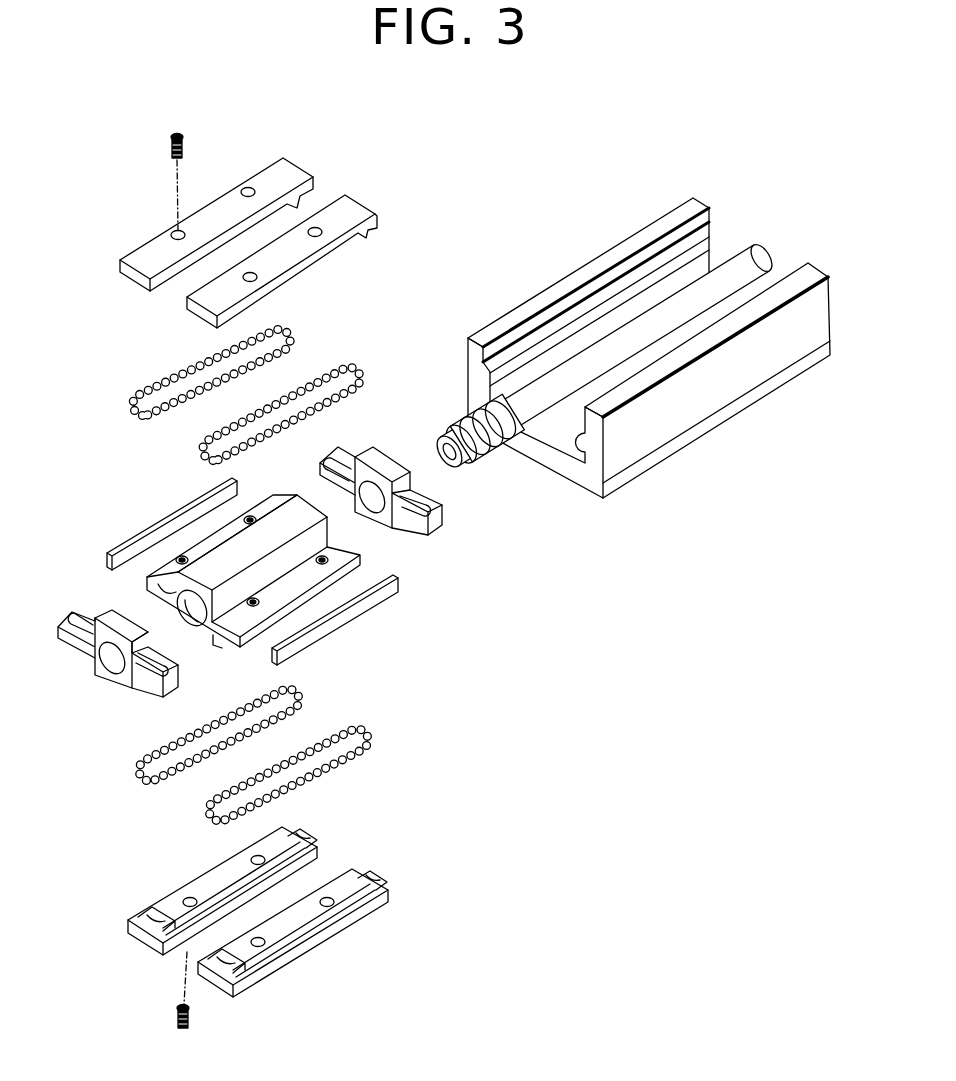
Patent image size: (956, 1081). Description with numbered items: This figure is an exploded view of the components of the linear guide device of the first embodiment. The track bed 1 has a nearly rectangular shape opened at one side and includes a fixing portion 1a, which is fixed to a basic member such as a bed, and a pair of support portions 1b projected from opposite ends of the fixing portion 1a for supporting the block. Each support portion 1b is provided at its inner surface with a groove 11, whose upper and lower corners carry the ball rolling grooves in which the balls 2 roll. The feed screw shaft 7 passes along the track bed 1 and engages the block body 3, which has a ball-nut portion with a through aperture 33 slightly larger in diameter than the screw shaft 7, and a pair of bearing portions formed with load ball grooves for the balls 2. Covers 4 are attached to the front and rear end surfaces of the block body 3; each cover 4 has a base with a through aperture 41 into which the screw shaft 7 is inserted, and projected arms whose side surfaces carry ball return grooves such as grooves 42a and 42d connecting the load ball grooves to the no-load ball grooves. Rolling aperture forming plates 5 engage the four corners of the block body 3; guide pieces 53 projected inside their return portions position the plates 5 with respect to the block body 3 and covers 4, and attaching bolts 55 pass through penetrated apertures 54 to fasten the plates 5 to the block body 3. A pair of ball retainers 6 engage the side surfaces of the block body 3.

The track bed 1 is at (644, 387).
The fixing portion 1a is at (580, 480).
The support portions 1b is at (630, 243).
The groove 11 is at (486, 363).
The balls 2 is at (141, 386).
The block body 3 is at (222, 595).
The through aperture 33 is at (188, 614).
The cover 4 is at (290, 573).
The through aperture 41 is at (110, 659).
The ball return groove 42a is at (338, 456).
The ball return groove 42d is at (446, 497).
The rolling aperture forming plates 5 is at (270, 570).
The guide pieces 53 is at (160, 914).
The penetrated apertures 54 is at (246, 189).
The attaching bolts 55 is at (181, 134).
The ball retainers 6 is at (149, 521).
The feed screw shaft 7 is at (744, 237).